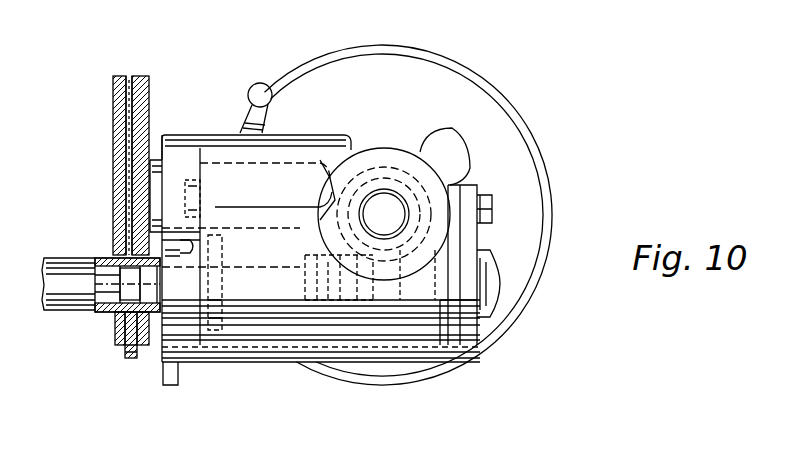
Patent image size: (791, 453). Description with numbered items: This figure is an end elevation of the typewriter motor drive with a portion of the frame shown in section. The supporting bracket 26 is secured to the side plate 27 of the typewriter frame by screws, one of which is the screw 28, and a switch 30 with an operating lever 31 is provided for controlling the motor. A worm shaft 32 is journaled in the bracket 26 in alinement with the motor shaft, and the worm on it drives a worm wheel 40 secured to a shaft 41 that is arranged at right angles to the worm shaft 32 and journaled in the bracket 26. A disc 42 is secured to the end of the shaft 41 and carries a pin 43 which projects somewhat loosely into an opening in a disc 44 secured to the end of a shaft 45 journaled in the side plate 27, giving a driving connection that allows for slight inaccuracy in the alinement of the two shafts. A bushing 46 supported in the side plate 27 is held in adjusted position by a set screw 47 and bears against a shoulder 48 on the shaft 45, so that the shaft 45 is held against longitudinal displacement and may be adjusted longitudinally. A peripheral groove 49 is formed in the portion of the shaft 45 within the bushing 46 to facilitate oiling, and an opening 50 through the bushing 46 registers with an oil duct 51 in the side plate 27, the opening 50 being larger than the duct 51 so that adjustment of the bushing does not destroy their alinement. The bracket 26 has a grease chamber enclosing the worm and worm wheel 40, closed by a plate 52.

The supporting bracket 26 is at (265, 353).
The side plate 27 is at (118, 130).
The screw 28 is at (203, 182).
The switch 30 is at (220, 130).
The operating lever 31 is at (261, 88).
The worm shaft 32 is at (388, 203).
The worm wheel 40 is at (440, 352).
The shaft 41 is at (447, 298).
The disc 42 is at (226, 243).
The pin 43 is at (190, 247).
The disc 44 is at (203, 330).
The shaft 45 is at (43, 313).
The bushing 46 is at (110, 312).
The set screw 47 is at (140, 360).
The shoulder 48 is at (97, 287).
The peripheral groove 49 is at (100, 310).
The opening 50 is at (180, 253).
The oil duct 51 is at (128, 165).
The plate 52 is at (470, 234).